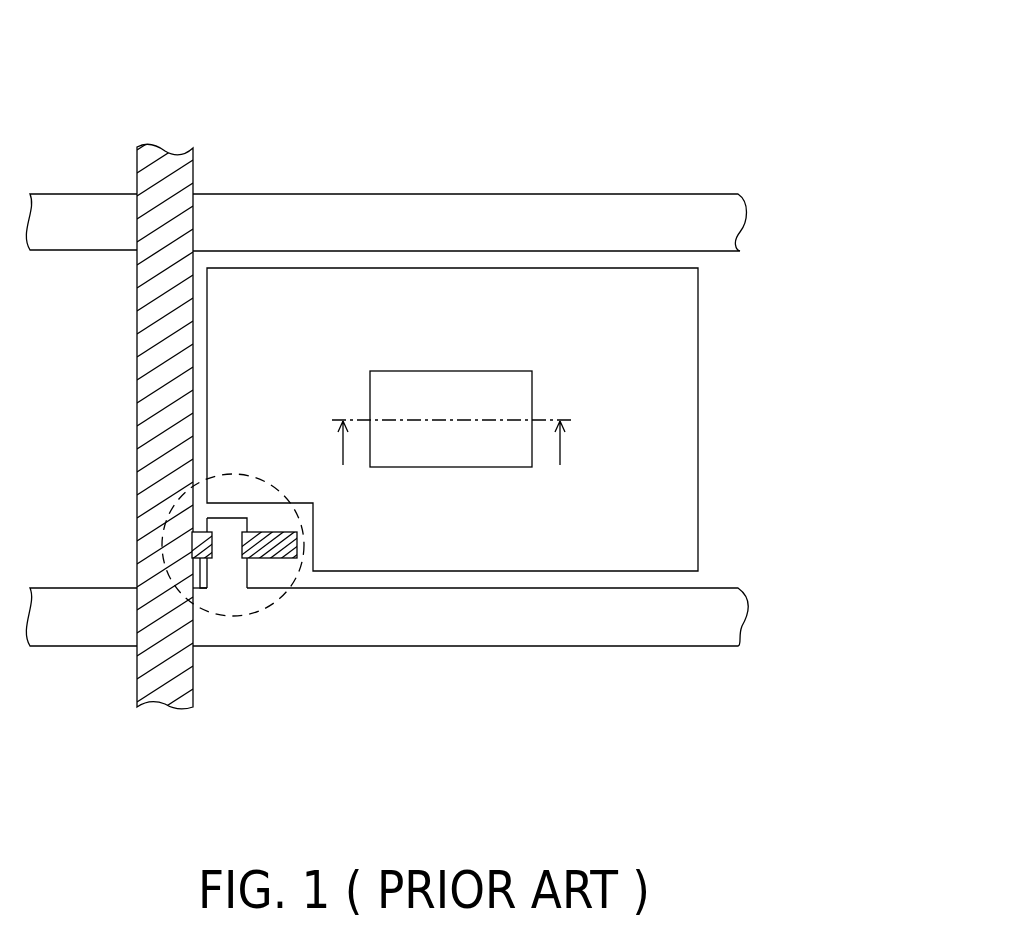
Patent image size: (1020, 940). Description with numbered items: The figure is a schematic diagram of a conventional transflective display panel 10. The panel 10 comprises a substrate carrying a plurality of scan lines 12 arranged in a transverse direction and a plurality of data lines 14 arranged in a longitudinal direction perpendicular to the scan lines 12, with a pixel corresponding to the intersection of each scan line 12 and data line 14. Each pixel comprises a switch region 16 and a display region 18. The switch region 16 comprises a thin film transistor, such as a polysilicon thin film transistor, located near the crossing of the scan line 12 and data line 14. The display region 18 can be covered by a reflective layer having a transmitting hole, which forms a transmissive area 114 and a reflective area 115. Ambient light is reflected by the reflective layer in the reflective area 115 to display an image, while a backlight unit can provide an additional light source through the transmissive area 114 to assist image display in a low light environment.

The transflective display panel 10 is at (624, 102).
The scan lines 12 is at (728, 619).
The data lines 14 is at (167, 155).
The switch region 16 is at (233, 617).
The display region 18 is at (782, 362).
The transmissive area 114 is at (515, 383).
The reflective area 115 is at (685, 455).